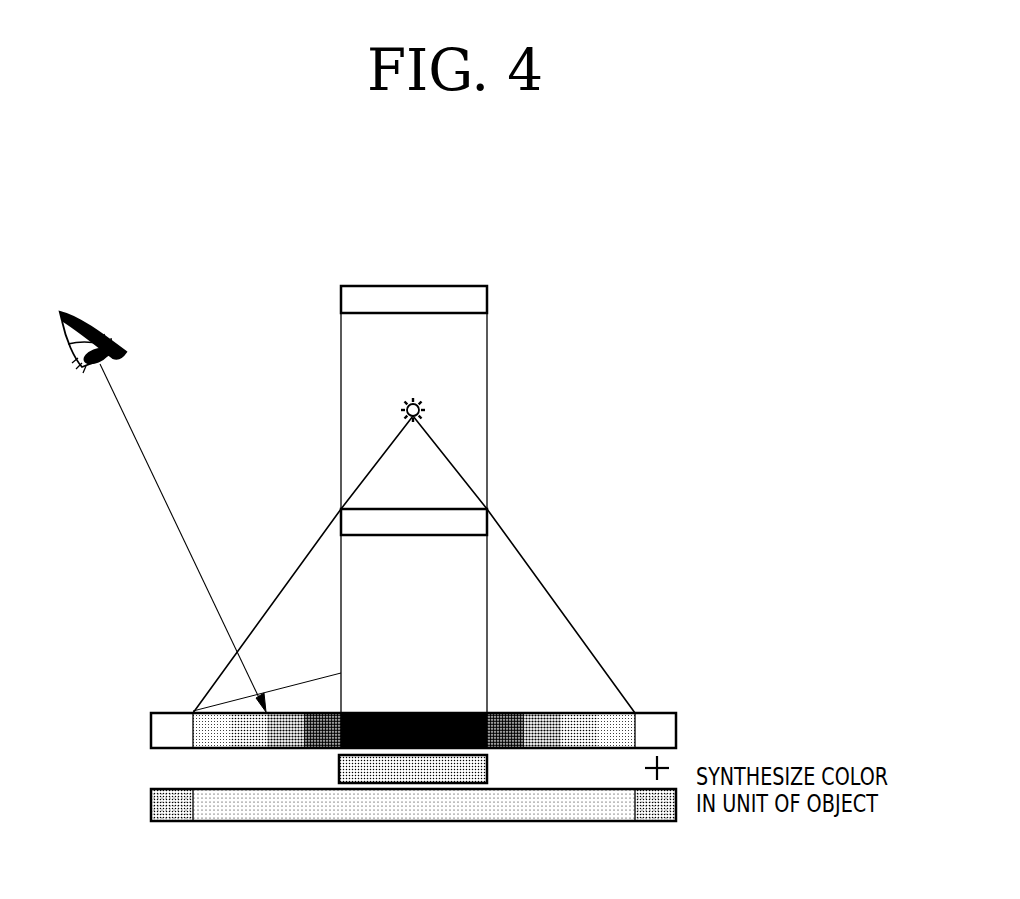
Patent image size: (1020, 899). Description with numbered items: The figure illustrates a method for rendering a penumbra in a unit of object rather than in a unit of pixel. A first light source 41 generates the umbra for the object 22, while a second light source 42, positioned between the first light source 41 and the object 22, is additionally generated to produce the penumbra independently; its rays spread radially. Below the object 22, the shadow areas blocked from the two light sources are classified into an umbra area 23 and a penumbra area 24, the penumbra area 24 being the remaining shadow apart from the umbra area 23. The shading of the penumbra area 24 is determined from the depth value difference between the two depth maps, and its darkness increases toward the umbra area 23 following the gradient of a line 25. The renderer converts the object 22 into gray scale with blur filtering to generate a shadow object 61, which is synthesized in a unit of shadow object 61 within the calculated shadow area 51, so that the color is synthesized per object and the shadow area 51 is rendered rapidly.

The first light source 41 is at (460, 285).
The second light source 42 is at (403, 409).
The object 22 is at (490, 516).
The umbra area 23 is at (474, 712).
The penumbra area 24 is at (283, 722).
The line 25 is at (308, 684).
The shadow object 61 is at (487, 769).
The shadow area 51 is at (566, 810).